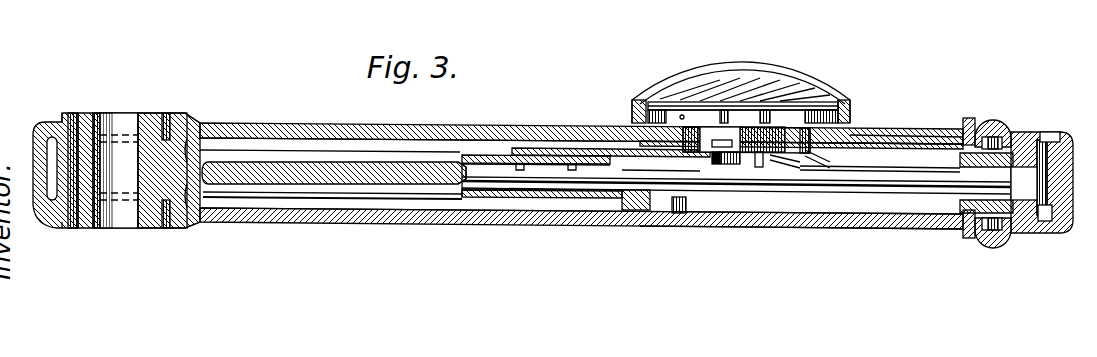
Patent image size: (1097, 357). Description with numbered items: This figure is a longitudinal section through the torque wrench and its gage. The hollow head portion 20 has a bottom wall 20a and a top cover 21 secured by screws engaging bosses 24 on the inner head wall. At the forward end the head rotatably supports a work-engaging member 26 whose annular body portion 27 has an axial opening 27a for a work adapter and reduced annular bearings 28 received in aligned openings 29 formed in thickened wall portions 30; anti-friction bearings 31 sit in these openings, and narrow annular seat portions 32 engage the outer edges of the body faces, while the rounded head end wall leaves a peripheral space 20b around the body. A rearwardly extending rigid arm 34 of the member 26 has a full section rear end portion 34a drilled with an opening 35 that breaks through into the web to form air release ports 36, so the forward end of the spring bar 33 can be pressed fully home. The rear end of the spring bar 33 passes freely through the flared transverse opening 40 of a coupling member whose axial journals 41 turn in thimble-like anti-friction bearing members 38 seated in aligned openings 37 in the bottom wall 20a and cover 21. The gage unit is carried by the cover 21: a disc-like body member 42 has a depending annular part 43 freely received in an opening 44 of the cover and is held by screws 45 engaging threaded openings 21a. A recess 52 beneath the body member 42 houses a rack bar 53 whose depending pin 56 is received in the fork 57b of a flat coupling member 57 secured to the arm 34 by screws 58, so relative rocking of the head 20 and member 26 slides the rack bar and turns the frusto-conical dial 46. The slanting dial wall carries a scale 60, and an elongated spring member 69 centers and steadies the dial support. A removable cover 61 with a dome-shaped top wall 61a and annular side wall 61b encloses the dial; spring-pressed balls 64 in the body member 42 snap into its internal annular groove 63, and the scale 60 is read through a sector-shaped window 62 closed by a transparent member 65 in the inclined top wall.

The hollow head portion 20 is at (730, 226).
The bottom wall 20a is at (850, 229).
The peripheral space 20b is at (50, 130).
The top cover 21 is at (330, 124).
The threaded openings 21a is at (630, 186).
The bosses 24 is at (680, 215).
The work-engaging member 26 is at (205, 150).
The annular body portion 27 is at (52, 226).
The axial opening 27a is at (115, 118).
The annular bearings 28 is at (93, 118).
The aligned openings 29 is at (160, 113).
The thickened wall portions 30 is at (180, 116).
The anti-friction bearings 31 is at (165, 118).
The annular seat portions 32 is at (72, 118).
The spring bar 33 is at (880, 196).
The rigid arm 34 is at (377, 200).
The full section rear end portion 34a is at (515, 200).
The opening 35 is at (610, 200).
The air release ports 36 is at (458, 160).
The aligned openings 37 is at (963, 125).
The anti-friction bearing members 38 is at (992, 122).
The transverse opening 40 is at (940, 166).
The axial journals 41 is at (985, 136).
The body member 42 is at (660, 125).
The depending annular part 43 is at (775, 165).
The opening 44 is at (810, 162).
The screws 45 is at (645, 142).
The frusto-conical dial 46 is at (775, 72).
The recess 52 is at (720, 138).
The rack bar 53 is at (732, 118).
The pin 56 is at (735, 160).
The coupling member 57 is at (645, 190).
The fork 57b is at (759, 168).
The screws 58 is at (565, 148).
The scale 60 is at (822, 100).
The cover 61 is at (656, 95).
The dome-shaped top wall 61a is at (715, 64).
The annular side wall 61b is at (850, 110).
The window 62 is at (818, 80).
The annular groove 63 is at (634, 110).
The spring-pressed balls 64 is at (842, 88).
The transparent member 65 is at (840, 103).
The spring member 69 is at (745, 89).